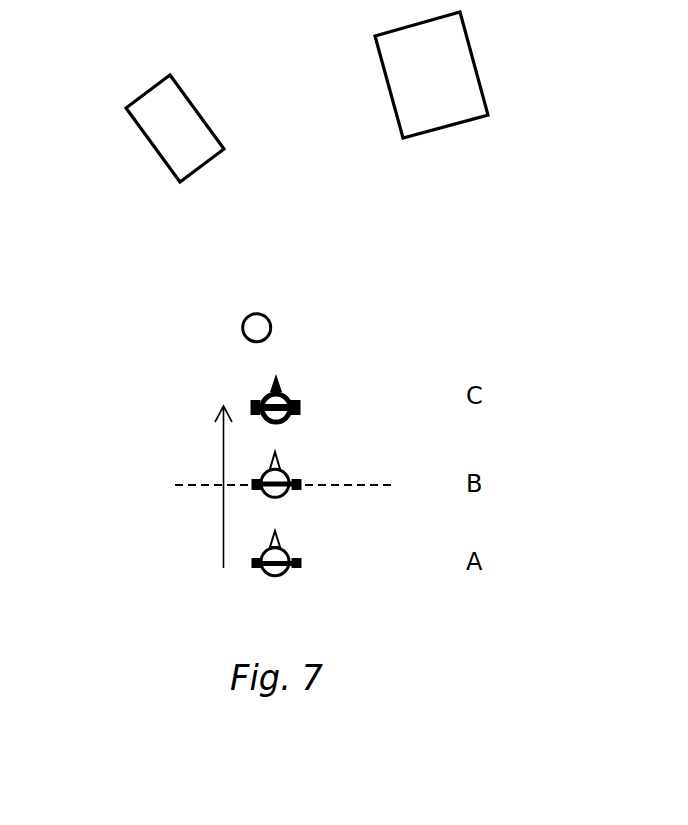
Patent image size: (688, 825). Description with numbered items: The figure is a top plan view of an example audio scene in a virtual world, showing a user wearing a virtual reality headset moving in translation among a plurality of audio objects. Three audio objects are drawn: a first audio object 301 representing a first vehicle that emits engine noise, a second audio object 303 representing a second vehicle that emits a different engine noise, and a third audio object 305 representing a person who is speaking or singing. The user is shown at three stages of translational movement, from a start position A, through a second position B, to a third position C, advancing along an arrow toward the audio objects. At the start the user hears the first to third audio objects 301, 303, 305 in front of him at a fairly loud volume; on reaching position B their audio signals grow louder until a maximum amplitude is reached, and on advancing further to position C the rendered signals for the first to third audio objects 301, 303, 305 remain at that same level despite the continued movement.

The first audio object 301 is at (155, 153).
The second audio object 303 is at (485, 98).
The third audio object 305 is at (273, 326).